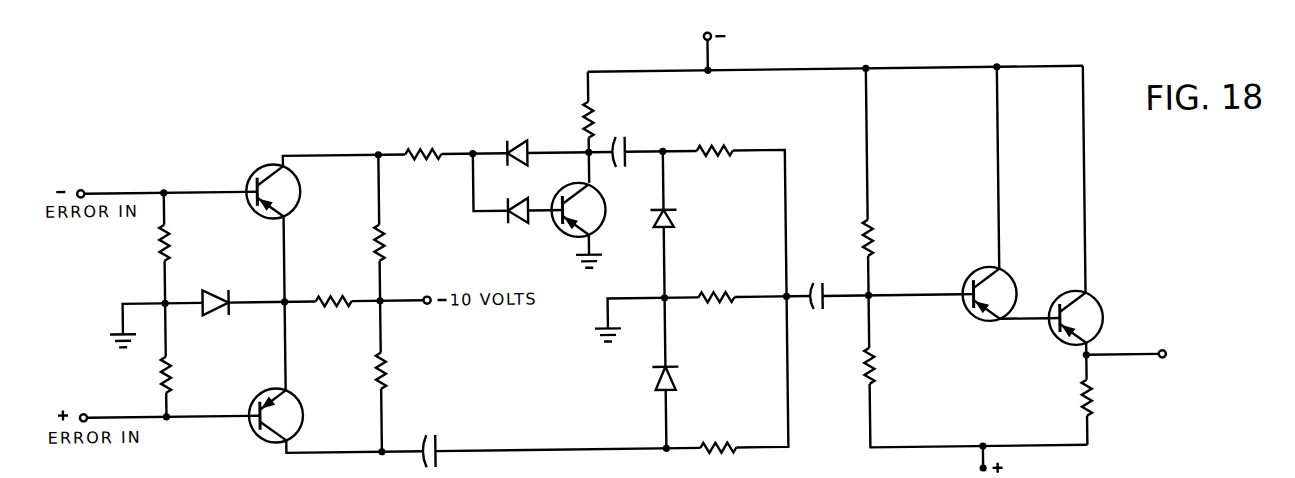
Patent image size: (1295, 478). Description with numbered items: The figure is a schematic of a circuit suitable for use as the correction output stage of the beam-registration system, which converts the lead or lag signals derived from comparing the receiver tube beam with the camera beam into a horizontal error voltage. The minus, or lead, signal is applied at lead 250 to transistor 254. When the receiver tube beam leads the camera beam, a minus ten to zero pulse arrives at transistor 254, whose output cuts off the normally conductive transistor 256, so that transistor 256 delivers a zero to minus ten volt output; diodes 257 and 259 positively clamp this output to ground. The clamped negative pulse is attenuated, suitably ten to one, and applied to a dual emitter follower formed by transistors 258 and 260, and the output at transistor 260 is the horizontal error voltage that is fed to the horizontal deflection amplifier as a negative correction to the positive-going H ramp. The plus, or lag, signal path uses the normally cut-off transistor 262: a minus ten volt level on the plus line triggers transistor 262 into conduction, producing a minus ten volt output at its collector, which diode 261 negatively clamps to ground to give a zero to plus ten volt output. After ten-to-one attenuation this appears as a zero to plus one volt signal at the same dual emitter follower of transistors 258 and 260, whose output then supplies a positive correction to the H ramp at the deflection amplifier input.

The lead 250 is at (151, 175).
The transistor 254 is at (300, 202).
The transistor 256 is at (600, 220).
The diode 257 is at (216, 310).
The transistor 258 is at (981, 273).
The diode 259 is at (679, 217).
The transistor 260 is at (1054, 345).
The diode 261 is at (653, 378).
The transistor 262 is at (300, 421).